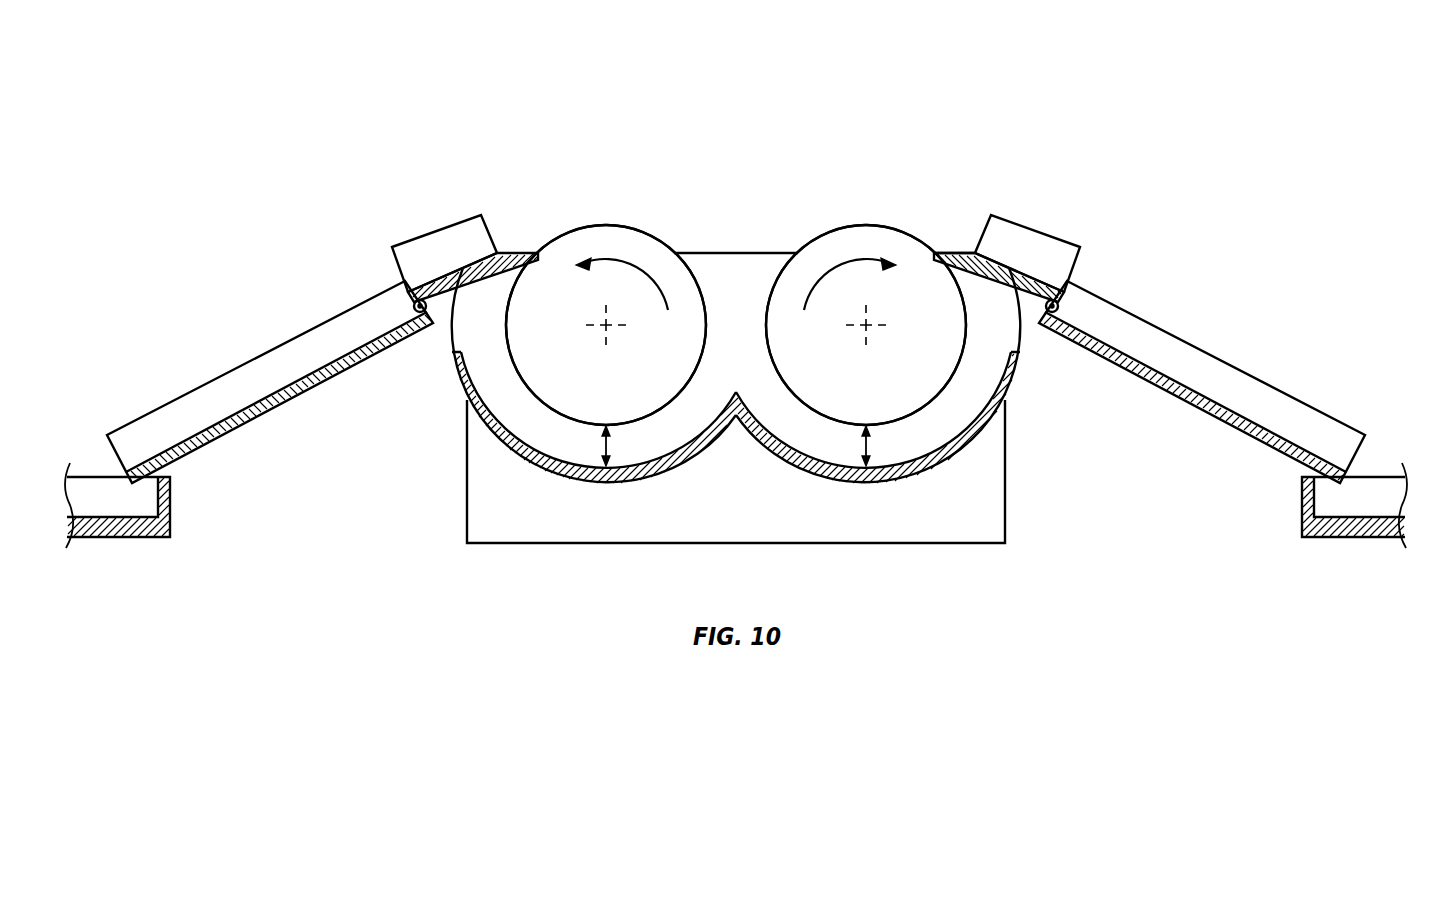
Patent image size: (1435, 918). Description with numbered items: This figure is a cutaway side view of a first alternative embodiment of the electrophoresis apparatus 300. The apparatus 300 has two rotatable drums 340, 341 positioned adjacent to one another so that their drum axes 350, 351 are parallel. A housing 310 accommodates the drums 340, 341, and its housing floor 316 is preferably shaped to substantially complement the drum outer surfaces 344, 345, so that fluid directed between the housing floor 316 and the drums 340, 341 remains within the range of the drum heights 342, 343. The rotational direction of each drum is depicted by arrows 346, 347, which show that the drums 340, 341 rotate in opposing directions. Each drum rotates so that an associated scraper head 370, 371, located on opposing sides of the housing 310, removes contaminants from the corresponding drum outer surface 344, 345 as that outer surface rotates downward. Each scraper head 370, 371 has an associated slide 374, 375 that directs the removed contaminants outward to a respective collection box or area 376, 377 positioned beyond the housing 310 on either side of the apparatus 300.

The apparatus 300 is at (207, 99).
The housing 310 is at (1013, 373).
The housing floor 316 is at (955, 440).
The rotatable drum 340 is at (877, 240).
The rotatable drum 341 is at (597, 240).
The drum height 342 is at (874, 448).
The drum height 343 is at (598, 448).
The drum outer surface 344 is at (773, 364).
The drum outer surface 345 is at (703, 283).
The arrow 346 is at (854, 262).
The arrow 347 is at (618, 262).
The drum axis 350 is at (869, 330).
The drum axis 351 is at (603, 330).
The scraper head 370 is at (1017, 272).
The scraper head 371 is at (455, 272).
The slide 374 is at (1195, 396).
The slide 375 is at (280, 397).
The collection box or area 376 is at (1303, 525).
The collection box or area 377 is at (167, 525).